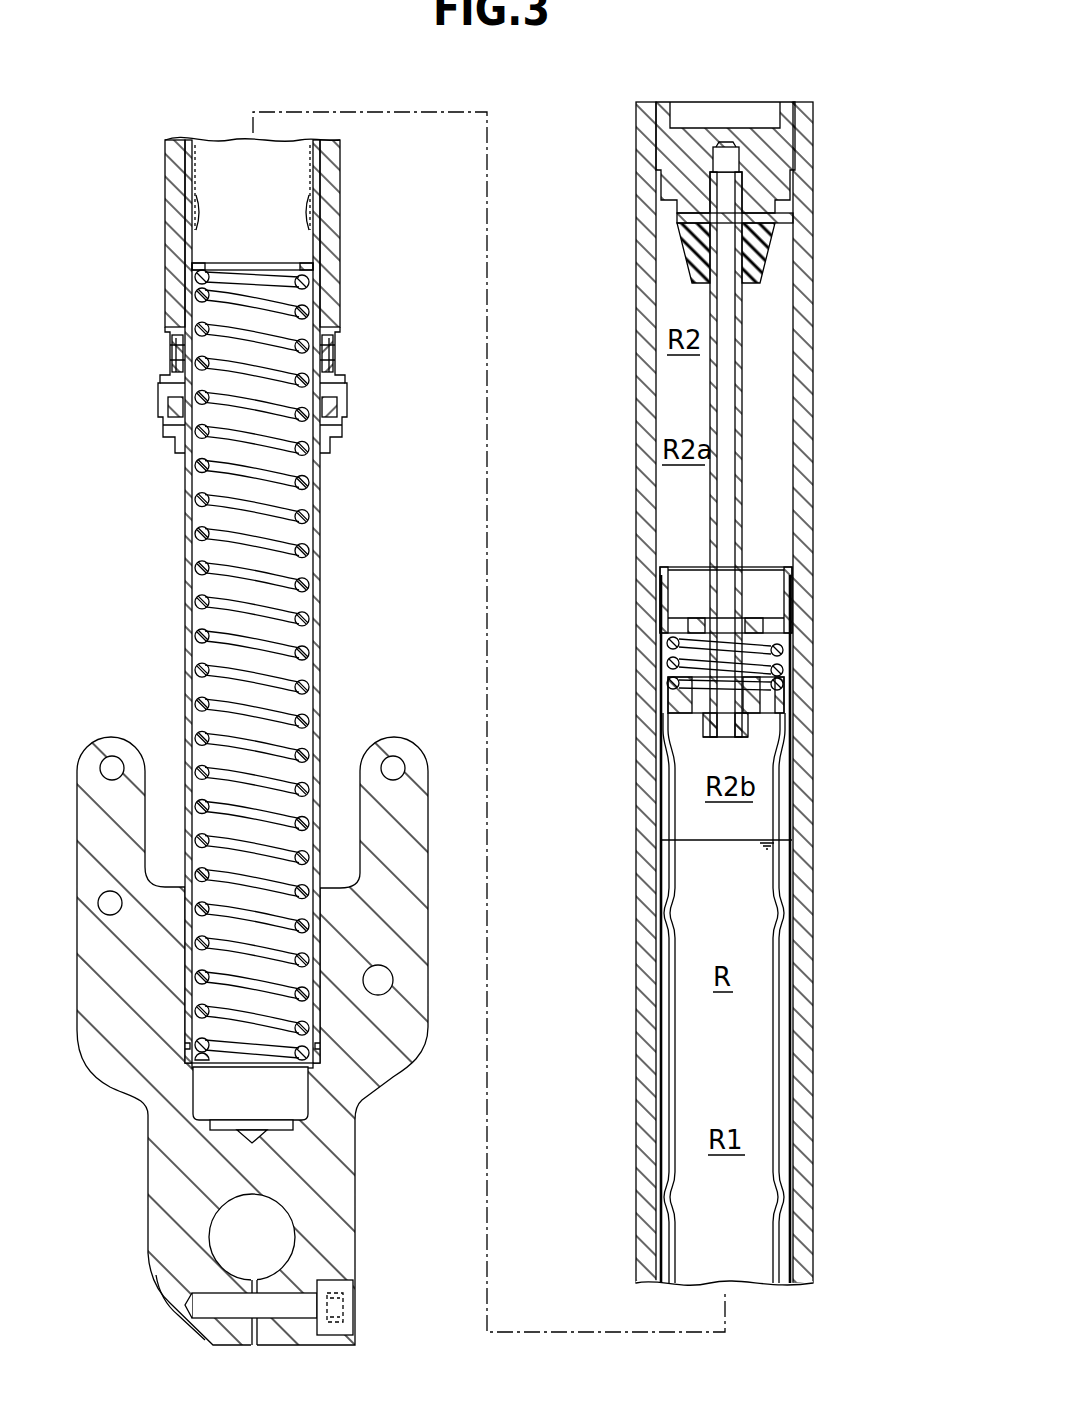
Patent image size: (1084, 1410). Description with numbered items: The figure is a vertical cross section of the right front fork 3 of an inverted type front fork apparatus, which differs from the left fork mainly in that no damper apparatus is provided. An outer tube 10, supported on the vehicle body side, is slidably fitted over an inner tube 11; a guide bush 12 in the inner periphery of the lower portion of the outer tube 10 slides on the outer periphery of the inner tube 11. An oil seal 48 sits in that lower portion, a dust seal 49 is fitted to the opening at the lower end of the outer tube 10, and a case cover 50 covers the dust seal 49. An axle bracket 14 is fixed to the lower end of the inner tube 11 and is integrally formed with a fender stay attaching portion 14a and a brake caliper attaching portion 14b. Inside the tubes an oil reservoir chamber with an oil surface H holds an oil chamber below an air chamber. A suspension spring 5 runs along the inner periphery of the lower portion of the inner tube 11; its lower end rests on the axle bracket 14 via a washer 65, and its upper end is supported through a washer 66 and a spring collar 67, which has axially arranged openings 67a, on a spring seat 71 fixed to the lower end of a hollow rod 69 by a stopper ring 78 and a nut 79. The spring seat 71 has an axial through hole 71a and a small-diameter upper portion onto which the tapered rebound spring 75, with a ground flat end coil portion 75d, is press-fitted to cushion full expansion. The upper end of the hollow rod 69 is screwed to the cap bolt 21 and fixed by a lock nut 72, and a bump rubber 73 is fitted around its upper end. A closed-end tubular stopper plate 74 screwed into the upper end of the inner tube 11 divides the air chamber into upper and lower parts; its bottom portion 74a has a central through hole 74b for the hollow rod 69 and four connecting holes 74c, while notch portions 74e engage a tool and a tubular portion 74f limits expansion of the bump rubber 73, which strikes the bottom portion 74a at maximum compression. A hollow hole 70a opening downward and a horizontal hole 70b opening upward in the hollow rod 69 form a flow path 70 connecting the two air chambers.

The right front fork 3 is at (478, 90).
The suspension spring 5 is at (310, 580).
The outer tube 10 is at (805, 308).
The inner tube 11 is at (318, 640).
The guide bush 12 is at (177, 312).
The axle bracket 14 is at (338, 1168).
The fender stay attaching portion 14a is at (393, 745).
The brake caliper attaching portion 14b is at (110, 745).
The cap bolt 21 is at (787, 145).
The oil seal 48 is at (337, 357).
The dust seal 49 is at (162, 433).
The case cover 50 is at (165, 443).
The washer 65 is at (355, 1108).
The washer 66 is at (313, 272).
The spring collar 67 is at (777, 988).
The openings 67a is at (775, 910).
The hollow rod 69 is at (738, 372).
The flow path 70 is at (728, 490).
The hollow hole 70a is at (732, 433).
The horizontal hole 70b is at (710, 397).
The spring seat 71 is at (767, 705).
The through hole 71a is at (675, 698).
The lock nut 72 is at (777, 218).
The bump rubber 73 is at (757, 253).
The stopper plate 74 is at (790, 623).
The bottom portion 74a is at (663, 620).
The through hole 74b is at (743, 620).
The connecting holes 74c is at (773, 628).
The notch portions 74e is at (787, 570).
The tubular portion 74f is at (662, 590).
The rebound spring 75 is at (668, 662).
The flat end coil portion 75d is at (787, 658).
The stopper ring 78 is at (673, 685).
The nut 79 is at (775, 717).
The oil surface H is at (792, 840).